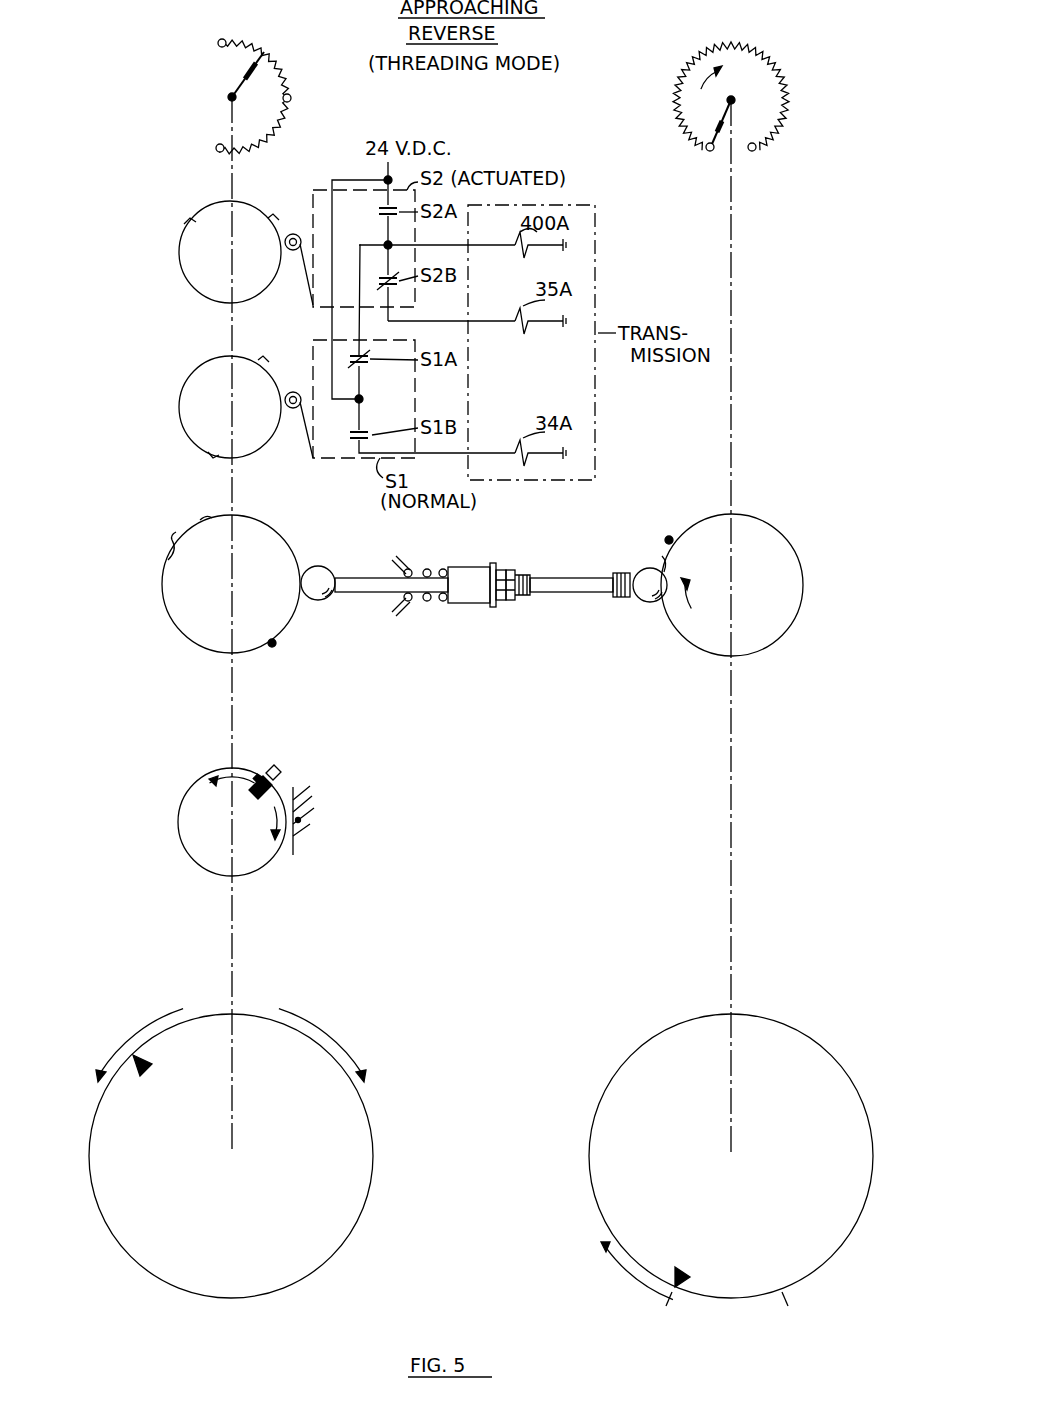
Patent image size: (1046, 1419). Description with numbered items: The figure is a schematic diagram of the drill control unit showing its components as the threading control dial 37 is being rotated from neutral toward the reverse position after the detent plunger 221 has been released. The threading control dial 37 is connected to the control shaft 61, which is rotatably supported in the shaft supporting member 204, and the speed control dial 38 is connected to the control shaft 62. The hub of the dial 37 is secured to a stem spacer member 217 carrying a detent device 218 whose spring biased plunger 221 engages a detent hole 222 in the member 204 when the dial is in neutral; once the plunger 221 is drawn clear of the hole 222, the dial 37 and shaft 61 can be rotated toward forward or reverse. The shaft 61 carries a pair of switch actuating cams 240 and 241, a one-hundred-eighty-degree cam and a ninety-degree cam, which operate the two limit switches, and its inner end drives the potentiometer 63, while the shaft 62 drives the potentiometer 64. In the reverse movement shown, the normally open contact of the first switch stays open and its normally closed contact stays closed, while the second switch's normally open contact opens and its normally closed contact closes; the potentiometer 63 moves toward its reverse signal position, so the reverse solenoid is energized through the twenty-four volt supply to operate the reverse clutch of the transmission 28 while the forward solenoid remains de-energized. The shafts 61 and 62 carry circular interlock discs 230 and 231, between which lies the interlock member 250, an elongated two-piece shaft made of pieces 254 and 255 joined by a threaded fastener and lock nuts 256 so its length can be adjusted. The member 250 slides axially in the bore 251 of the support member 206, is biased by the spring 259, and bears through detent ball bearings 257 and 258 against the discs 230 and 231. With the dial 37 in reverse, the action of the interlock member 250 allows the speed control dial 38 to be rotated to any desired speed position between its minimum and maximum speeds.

The potentiometer 63 is at (218, 90).
The potentiometer 64 is at (796, 93).
The switch actuating cam 241 is at (186, 278).
The switch actuating cam 240 is at (186, 397).
The transmission 28 is at (598, 270).
The interlock disc 230 is at (170, 612).
The interlock disc 231 is at (780, 636).
The ball bearing 257 is at (316, 574).
The interlock member piece 254 is at (355, 600).
The spring 259 is at (426, 570).
The support member 206 is at (400, 562).
The bore 251 is at (398, 595).
The interlock member 250 is at (534, 572).
The lock nuts 256 is at (509, 568).
The interlock member piece 255 is at (562, 594).
The ball bearing 258 is at (648, 603).
The stem spacer member 217 is at (183, 841).
The detent device 218 is at (258, 782).
The detent plunger 221 is at (279, 774).
The detent hole 222 is at (303, 817).
The shaft supporting member 204 is at (300, 835).
The control shaft 61 is at (233, 923).
The control shaft 62 is at (733, 859).
The threading control dial 37 is at (247, 1185).
The speed control dial 38 is at (748, 1190).